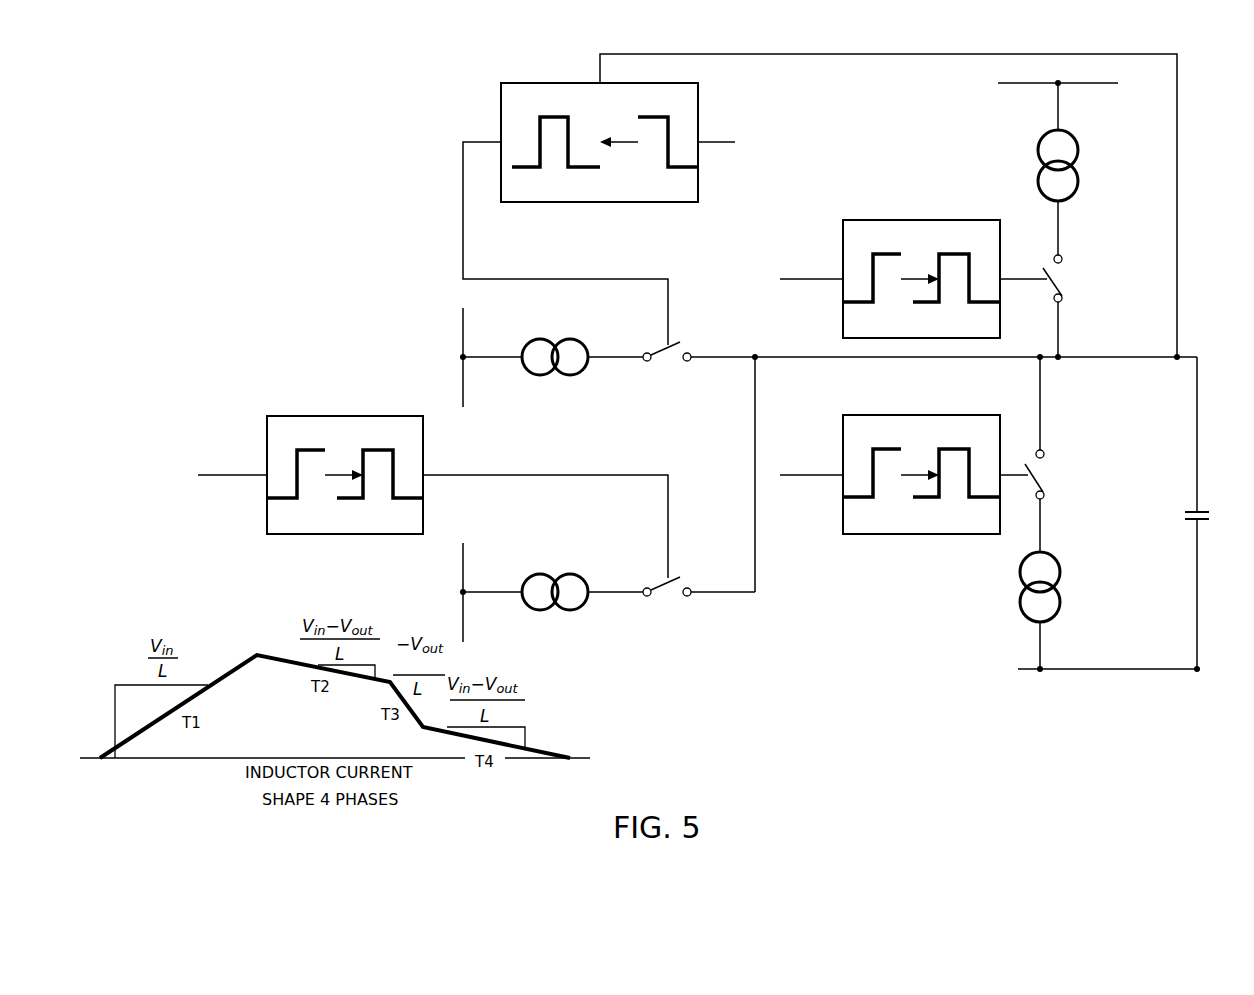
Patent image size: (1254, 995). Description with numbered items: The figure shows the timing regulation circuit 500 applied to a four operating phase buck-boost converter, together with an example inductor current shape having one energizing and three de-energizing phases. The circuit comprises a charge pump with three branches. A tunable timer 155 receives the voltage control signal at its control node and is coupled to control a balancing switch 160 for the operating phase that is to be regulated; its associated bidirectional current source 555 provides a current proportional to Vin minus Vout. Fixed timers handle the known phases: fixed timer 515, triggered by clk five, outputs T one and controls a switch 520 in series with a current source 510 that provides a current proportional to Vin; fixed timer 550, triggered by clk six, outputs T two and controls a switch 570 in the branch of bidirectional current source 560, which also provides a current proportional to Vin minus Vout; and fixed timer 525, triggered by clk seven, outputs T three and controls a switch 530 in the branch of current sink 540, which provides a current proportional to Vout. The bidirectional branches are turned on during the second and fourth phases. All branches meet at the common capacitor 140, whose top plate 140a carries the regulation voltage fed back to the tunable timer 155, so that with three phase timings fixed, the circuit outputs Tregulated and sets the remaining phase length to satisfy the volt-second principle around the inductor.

The timing regulation circuit 500 is at (252, 166).
The tunable timer 155 is at (495, 120).
The current source 510 is at (1038, 150).
The fixed timer 515 is at (966, 212).
The switch 520 is at (1061, 287).
The fixed timer 525 is at (933, 546).
The switch 530 is at (1043, 482).
The current sink 540 is at (1019, 603).
The fixed timer 550 is at (330, 545).
The bidirectional current source 555 is at (540, 375).
The bidirectional current source 560 is at (567, 610).
The switch 570 is at (660, 602).
The balancing switch 160 is at (659, 370).
The common capacitor 140 is at (1215, 538).
The top plate 140a is at (1188, 510).